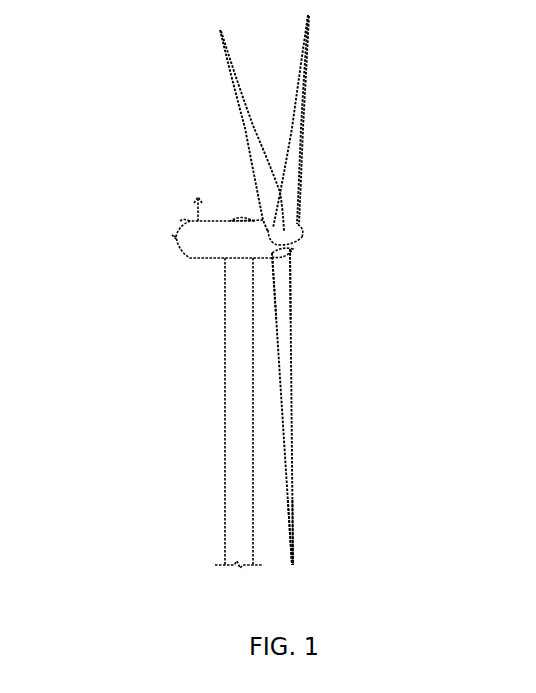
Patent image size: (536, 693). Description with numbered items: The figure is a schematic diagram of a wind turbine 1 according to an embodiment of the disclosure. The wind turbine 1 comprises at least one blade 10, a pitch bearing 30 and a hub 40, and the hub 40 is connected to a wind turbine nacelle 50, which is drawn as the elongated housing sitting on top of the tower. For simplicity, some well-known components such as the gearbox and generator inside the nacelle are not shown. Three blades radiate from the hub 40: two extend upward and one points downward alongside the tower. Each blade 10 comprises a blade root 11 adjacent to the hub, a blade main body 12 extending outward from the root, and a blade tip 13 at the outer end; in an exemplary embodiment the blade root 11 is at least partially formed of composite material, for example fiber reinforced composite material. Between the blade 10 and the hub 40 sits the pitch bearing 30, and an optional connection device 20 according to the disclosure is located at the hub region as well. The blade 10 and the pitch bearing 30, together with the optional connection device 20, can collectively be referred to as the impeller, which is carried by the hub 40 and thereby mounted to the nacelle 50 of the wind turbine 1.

The wind turbine 1 is at (134, 78).
The blade 10 is at (298, 138).
The blade root 11 is at (292, 293).
The blade main body 12 is at (292, 392).
The blade tip 13 is at (297, 547).
The connection device 20 is at (298, 232).
The pitch bearing 30 is at (293, 258).
The hub 40 is at (303, 245).
The wind turbine nacelle 50 is at (197, 240).